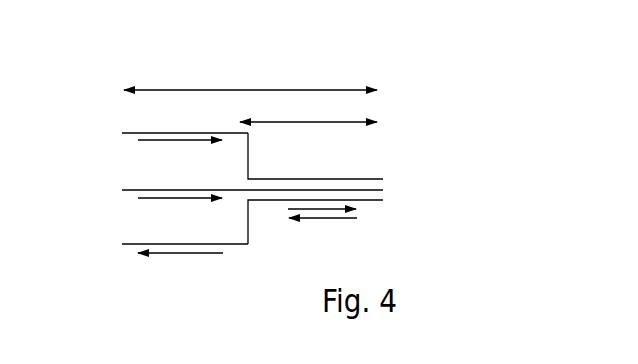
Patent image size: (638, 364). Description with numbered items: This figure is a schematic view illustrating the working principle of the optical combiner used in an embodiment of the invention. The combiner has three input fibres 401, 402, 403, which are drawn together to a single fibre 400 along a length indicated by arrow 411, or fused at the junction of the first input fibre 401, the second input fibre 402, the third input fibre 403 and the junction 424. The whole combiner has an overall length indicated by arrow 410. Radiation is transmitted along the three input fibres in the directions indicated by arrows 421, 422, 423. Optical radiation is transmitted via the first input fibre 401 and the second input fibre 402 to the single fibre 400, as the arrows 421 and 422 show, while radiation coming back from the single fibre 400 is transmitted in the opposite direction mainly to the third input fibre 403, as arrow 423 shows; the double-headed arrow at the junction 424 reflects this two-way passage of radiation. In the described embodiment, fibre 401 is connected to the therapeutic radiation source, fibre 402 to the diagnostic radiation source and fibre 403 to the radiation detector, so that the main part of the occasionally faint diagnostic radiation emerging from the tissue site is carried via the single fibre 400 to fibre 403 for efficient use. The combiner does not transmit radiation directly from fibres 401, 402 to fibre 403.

The single fibre 400 is at (412, 183).
The first input fibre 401 is at (137, 133).
The second input fibre 402 is at (137, 189).
The third input fibre 403 is at (137, 244).
The combiner length arrow 410 is at (325, 90).
The drawn-together length arrow 411 is at (327, 122).
The radiation direction arrow of first input fibre 421 is at (170, 143).
The radiation direction arrow of second input fibre 422 is at (170, 201).
The radiation direction arrow of third input fibre 423 is at (173, 255).
The junction 424 is at (322, 218).